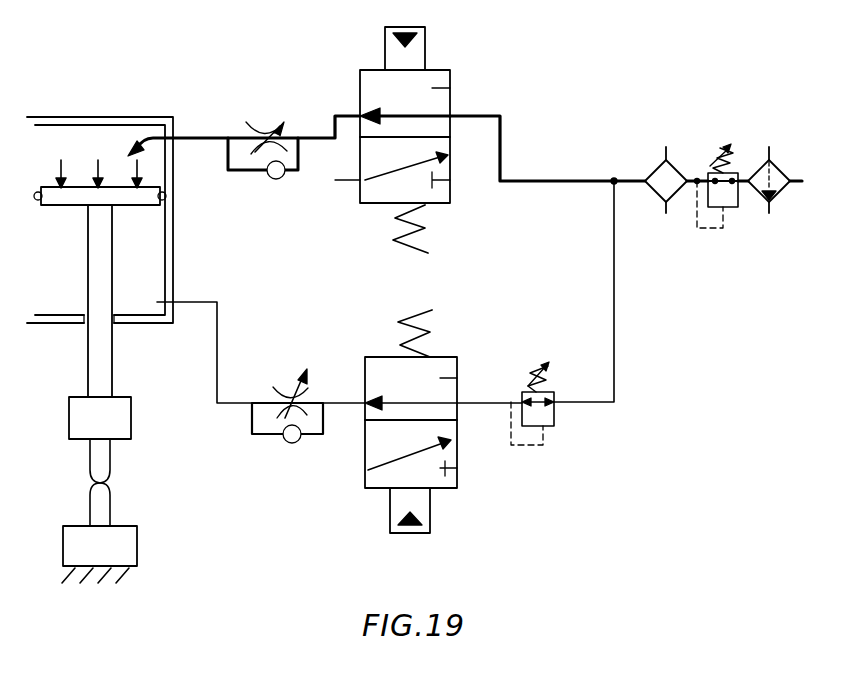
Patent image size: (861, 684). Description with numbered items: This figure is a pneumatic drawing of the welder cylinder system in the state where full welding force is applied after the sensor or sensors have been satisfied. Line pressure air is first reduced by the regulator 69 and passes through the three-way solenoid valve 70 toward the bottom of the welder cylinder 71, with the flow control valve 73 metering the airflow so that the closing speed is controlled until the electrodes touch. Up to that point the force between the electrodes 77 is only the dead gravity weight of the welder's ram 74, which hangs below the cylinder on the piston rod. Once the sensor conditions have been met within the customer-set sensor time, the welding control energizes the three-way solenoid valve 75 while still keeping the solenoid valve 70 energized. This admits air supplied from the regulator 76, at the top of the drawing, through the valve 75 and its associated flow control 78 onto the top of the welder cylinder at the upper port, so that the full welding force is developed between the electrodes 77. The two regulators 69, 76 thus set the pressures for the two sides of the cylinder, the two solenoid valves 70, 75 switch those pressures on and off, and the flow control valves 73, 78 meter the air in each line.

The regulator 69 is at (548, 427).
The three-way solenoid valve 70 is at (450, 490).
The air cylinder 71 is at (125, 207).
The flow control valve 73 is at (253, 428).
The ram 74 is at (131, 417).
The three-way solenoid valve 75 is at (446, 70).
The regulator 76 is at (735, 207).
The electrodes 77 is at (88, 457).
The air supply line with flow control 78 is at (179, 129).